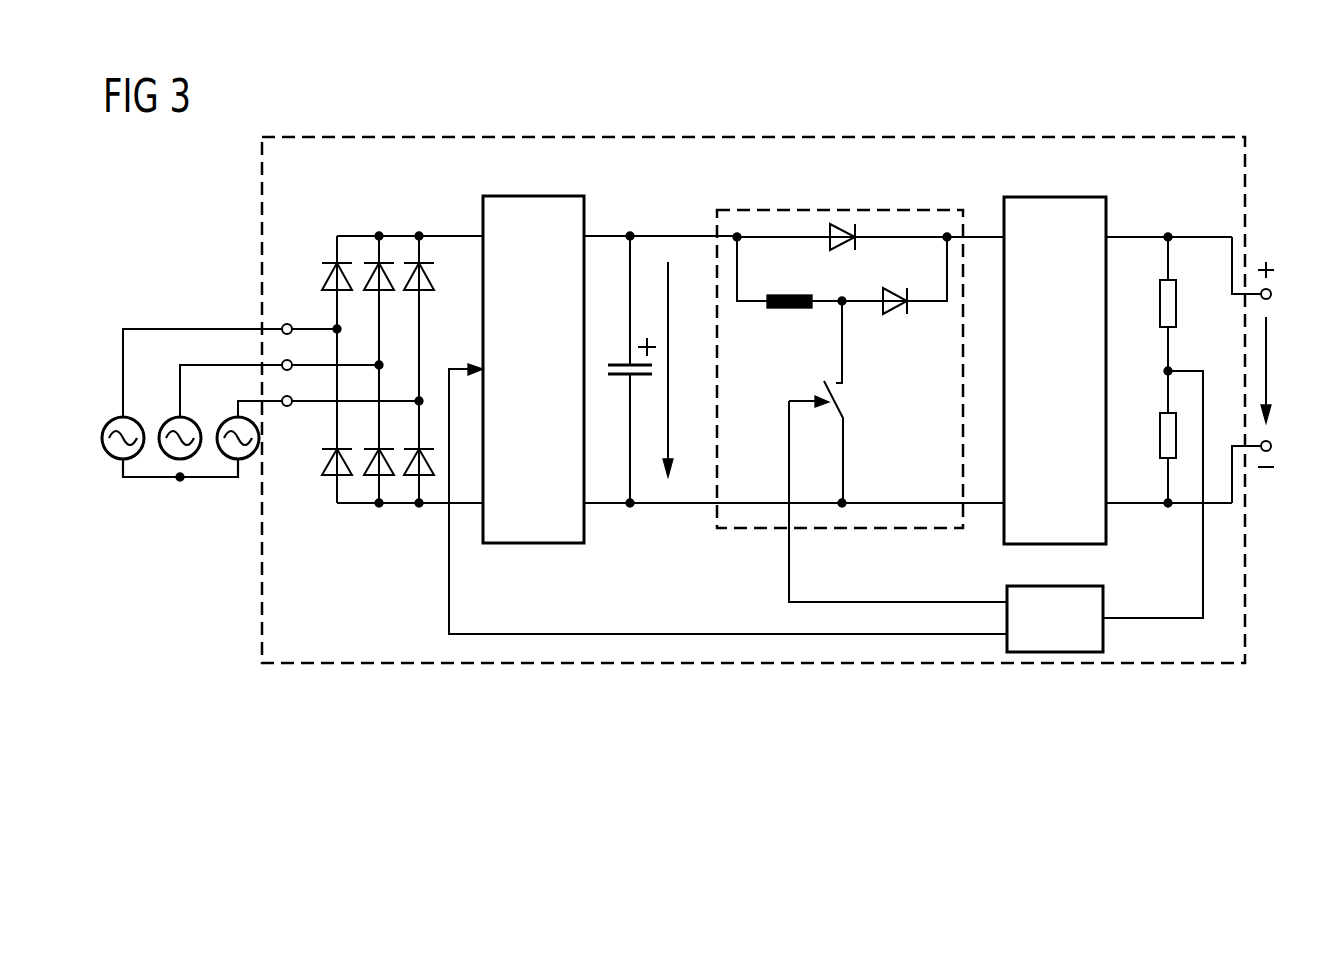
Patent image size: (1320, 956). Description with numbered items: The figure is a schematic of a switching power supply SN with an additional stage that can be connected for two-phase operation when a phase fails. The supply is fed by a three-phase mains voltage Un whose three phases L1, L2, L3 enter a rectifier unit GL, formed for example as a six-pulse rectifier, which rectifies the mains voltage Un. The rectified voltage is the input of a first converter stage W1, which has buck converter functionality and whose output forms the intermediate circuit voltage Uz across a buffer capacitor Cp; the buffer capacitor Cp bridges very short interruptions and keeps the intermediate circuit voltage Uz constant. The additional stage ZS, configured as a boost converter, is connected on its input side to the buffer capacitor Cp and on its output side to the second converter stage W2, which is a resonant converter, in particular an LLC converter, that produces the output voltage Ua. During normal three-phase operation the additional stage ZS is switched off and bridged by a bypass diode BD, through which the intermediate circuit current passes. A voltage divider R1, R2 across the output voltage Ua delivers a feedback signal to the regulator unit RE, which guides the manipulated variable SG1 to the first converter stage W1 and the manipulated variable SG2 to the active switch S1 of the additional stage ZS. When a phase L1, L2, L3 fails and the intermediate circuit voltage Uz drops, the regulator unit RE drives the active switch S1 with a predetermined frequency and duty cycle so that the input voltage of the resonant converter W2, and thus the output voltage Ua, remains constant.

The switching power supply SN is at (757, 137).
The three-phase mains voltage Un is at (180, 468).
The phase L1 is at (232, 357).
The phase L2 is at (281, 375).
The phase L3 is at (330, 393).
The rectifier unit GL is at (402, 389).
The first converter stage W1 is at (533, 369).
The buffer capacitor Cp is at (622, 369).
The intermediate circuit voltage Uz is at (684, 369).
The additional stage ZS is at (835, 208).
The bypass diode BD is at (842, 269).
The active switch S1 is at (834, 402).
The second converter stage W2 is at (1055, 370).
The voltage divider resistor R1 is at (1151, 304).
The voltage divider resistor R2 is at (1151, 439).
The output voltage Ua is at (1269, 370).
The regulator unit RE is at (1105, 511).
The manipulated variable SG1 is at (728, 499).
The manipulated variable SG2 is at (898, 504).